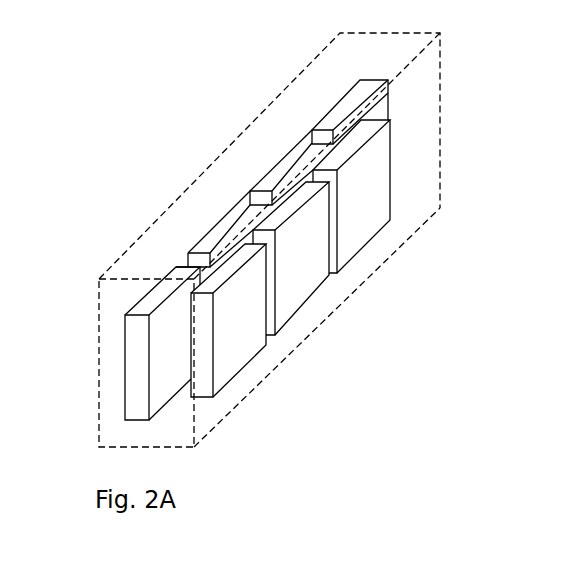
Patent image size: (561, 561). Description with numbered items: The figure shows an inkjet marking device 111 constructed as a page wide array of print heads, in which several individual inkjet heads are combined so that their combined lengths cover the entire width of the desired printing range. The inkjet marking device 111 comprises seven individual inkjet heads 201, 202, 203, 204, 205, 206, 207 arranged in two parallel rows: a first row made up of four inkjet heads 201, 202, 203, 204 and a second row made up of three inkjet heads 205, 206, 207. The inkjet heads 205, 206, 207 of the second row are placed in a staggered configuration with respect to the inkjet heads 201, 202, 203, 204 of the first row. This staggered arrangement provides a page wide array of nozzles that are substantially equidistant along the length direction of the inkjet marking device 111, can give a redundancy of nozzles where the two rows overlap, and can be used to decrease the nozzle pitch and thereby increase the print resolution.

The inkjet marking device 111 is at (350, 323).
The inkjet head 201 is at (148, 295).
The inkjet head 202 is at (212, 238).
The inkjet head 203 is at (285, 167).
The inkjet head 204 is at (350, 97).
The inkjet head 205 is at (235, 364).
The inkjet head 206 is at (308, 259).
The inkjet head 207 is at (367, 190).